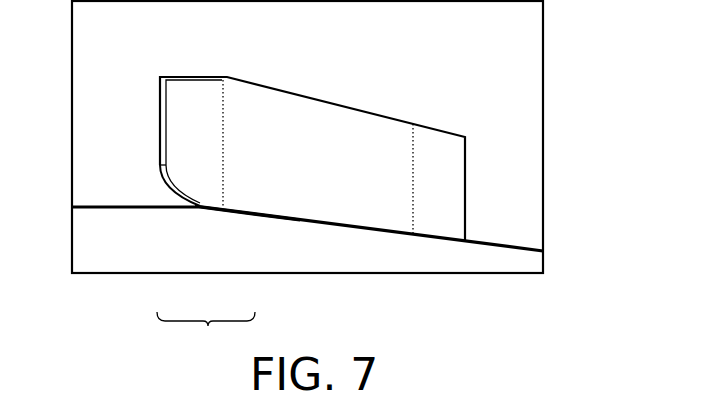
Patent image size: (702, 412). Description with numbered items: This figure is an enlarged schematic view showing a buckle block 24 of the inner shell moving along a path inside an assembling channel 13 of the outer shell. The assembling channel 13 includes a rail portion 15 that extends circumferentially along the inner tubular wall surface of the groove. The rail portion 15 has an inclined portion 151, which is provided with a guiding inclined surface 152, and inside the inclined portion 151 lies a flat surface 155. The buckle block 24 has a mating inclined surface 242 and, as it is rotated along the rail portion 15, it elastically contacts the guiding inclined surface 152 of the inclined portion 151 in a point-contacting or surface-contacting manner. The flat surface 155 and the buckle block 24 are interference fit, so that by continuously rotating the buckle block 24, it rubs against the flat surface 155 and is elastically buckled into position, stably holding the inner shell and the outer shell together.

The assembling channel 13 is at (497, 188).
The rail portion 15 is at (508, 246).
The buckle block 24 is at (292, 122).
The mating inclined surface 242 is at (352, 225).
The inclined portion 151 is at (206, 334).
The guiding inclined surface 152 is at (273, 220).
The flat surface 155 is at (138, 210).